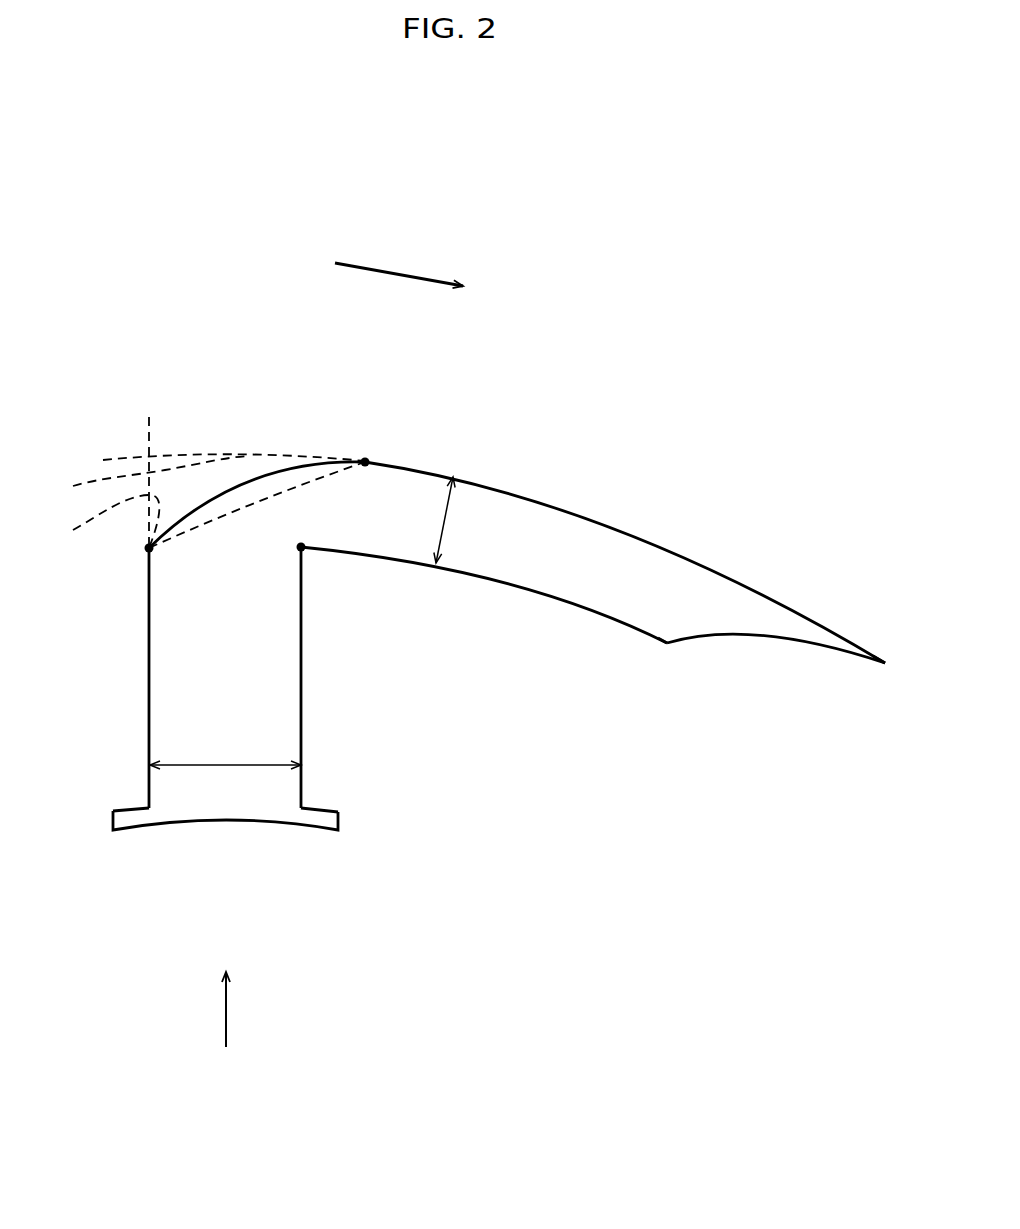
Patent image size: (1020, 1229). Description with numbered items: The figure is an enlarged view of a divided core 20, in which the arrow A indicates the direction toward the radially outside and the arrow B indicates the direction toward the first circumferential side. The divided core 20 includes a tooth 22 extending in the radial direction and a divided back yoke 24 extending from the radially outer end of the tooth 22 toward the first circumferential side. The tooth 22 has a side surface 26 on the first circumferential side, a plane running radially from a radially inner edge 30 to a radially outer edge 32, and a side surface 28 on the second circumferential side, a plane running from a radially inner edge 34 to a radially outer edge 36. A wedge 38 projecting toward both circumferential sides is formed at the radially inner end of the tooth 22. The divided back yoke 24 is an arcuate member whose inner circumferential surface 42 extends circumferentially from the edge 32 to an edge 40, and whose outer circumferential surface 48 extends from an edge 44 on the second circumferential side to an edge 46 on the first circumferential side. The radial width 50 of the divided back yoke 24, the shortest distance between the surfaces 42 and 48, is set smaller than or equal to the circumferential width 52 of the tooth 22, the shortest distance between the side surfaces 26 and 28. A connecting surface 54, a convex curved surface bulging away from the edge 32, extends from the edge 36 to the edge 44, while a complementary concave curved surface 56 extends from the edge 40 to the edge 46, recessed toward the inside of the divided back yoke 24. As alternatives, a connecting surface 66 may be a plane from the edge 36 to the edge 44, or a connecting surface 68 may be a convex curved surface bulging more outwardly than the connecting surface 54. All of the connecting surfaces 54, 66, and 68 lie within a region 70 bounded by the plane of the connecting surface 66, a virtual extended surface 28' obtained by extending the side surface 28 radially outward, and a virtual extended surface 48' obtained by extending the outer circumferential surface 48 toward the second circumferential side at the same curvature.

The divided core 20 is at (785, 133).
The tooth 22 is at (282, 700).
The divided back yoke 24 is at (552, 535).
The side surface 26 is at (302, 657).
The side surface 28 is at (108, 678).
The virtual extended surface 28' is at (111, 459).
The radially inner edge 30 is at (305, 802).
The radially outer edge 32 is at (301, 548).
The radially inner edge 34 is at (148, 807).
The radially outer edge 36 is at (148, 548).
The wedge 38 is at (323, 817).
The edge 40 is at (667, 647).
The inner circumferential surface 42 is at (560, 602).
The edge 44 is at (365, 462).
The edge 46 is at (885, 663).
The outer circumferential surface 48 is at (625, 551).
The virtual extended surface 48' is at (234, 402).
The radial width 50 is at (445, 525).
The circumferential width 52 is at (227, 760).
The connecting surface 54 is at (243, 485).
The concave curved surface 56 is at (742, 635).
The connecting surface 66 is at (283, 493).
The connecting surface 68 is at (101, 521).
The region 70 is at (146, 477).
The arrow A is at (226, 1022).
The arrow B is at (385, 270).